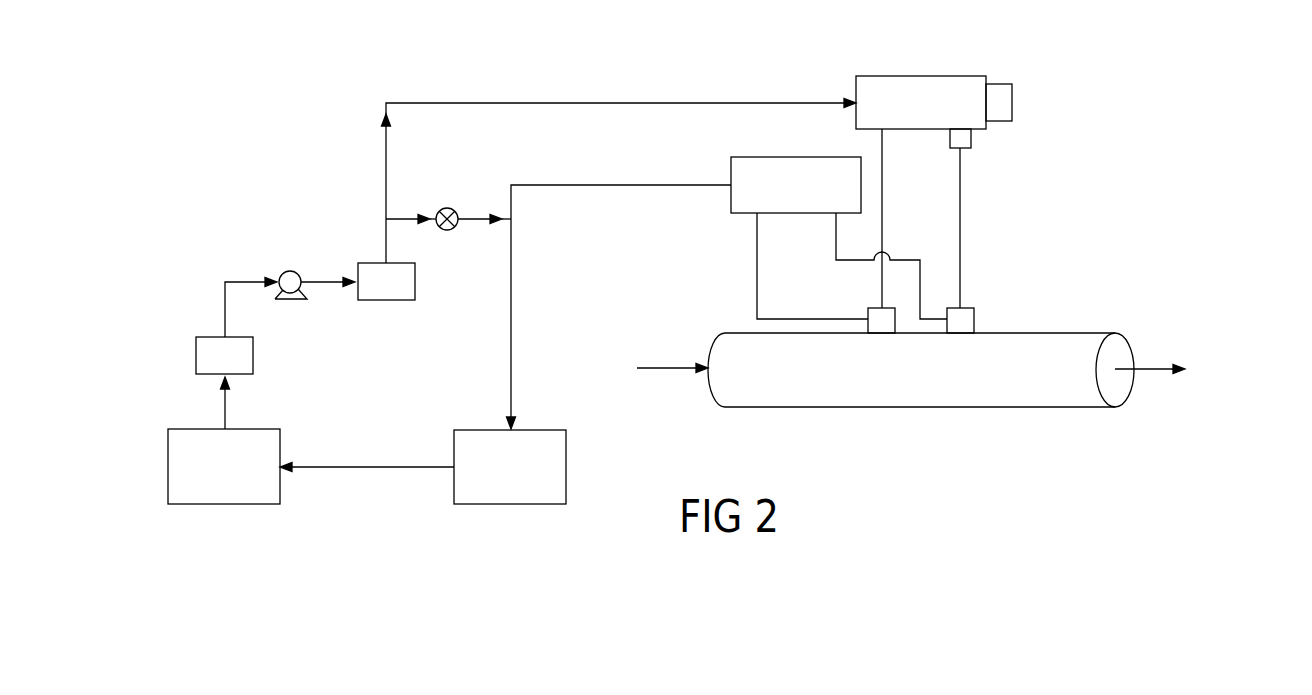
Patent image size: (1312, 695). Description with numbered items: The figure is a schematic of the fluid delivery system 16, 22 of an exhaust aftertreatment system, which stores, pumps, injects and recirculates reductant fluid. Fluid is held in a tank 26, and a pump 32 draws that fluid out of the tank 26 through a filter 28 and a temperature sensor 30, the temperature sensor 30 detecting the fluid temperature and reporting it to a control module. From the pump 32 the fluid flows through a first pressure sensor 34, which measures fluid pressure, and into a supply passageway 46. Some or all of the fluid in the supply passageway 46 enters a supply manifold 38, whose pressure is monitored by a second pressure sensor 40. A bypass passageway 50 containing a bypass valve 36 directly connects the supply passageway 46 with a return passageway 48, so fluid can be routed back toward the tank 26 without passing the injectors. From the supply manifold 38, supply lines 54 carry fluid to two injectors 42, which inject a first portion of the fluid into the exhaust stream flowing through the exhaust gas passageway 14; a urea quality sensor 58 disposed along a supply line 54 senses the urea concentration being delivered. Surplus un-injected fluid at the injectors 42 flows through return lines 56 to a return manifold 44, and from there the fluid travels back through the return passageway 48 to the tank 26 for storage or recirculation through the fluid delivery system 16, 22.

The exhaust gas passageway 14 is at (922, 407).
The fluid delivery system 16 is at (697, 76).
The fluid delivery system 22 is at (697, 76).
The tank 26 is at (566, 467).
The filter 28 is at (223, 504).
The temperature sensor 30 is at (253, 355).
The pump 32 is at (290, 270).
The first pressure sensor 34 is at (387, 300).
The bypass valve 36 is at (447, 207).
The supply manifold 38 is at (920, 85).
The second pressure sensor 40 is at (1012, 101).
The injectors 42 is at (873, 308).
The return manifold 44 is at (795, 165).
The supply passageway 46 is at (386, 168).
The return passageway 48 is at (511, 290).
The bypass passageway 50 is at (400, 221).
The supply lines 54 is at (882, 200).
The return lines 56 is at (836, 237).
The urea quality sensor 58 is at (971, 138).